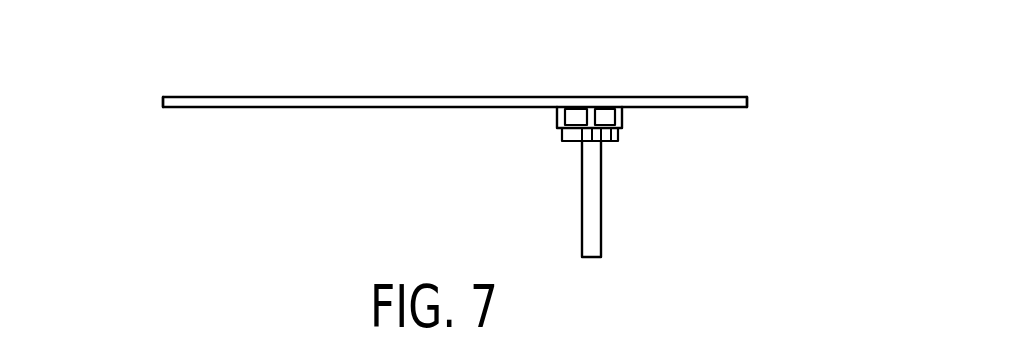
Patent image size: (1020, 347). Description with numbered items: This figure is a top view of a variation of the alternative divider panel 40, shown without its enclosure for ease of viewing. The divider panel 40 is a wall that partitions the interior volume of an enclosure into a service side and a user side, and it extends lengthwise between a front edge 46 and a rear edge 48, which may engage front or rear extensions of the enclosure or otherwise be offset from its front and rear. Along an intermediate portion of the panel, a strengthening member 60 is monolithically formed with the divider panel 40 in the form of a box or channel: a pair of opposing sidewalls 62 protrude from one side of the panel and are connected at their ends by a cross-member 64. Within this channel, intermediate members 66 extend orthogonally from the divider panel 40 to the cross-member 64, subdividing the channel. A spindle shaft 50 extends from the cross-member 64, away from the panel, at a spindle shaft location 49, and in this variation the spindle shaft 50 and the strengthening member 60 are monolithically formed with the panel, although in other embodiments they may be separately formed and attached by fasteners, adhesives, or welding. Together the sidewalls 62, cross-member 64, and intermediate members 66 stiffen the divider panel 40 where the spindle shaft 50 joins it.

The divider panel 40 is at (241, 120).
The front edge 46 is at (163, 102).
The rear edge 48 is at (747, 103).
The spindle shaft location 49 is at (573, 155).
The spindle shaft 50 is at (582, 250).
The strengthening member 60 is at (565, 142).
The sidewalls 62 is at (557, 122).
The cross-member 64 is at (620, 141).
The intermediate members 66 is at (588, 118).